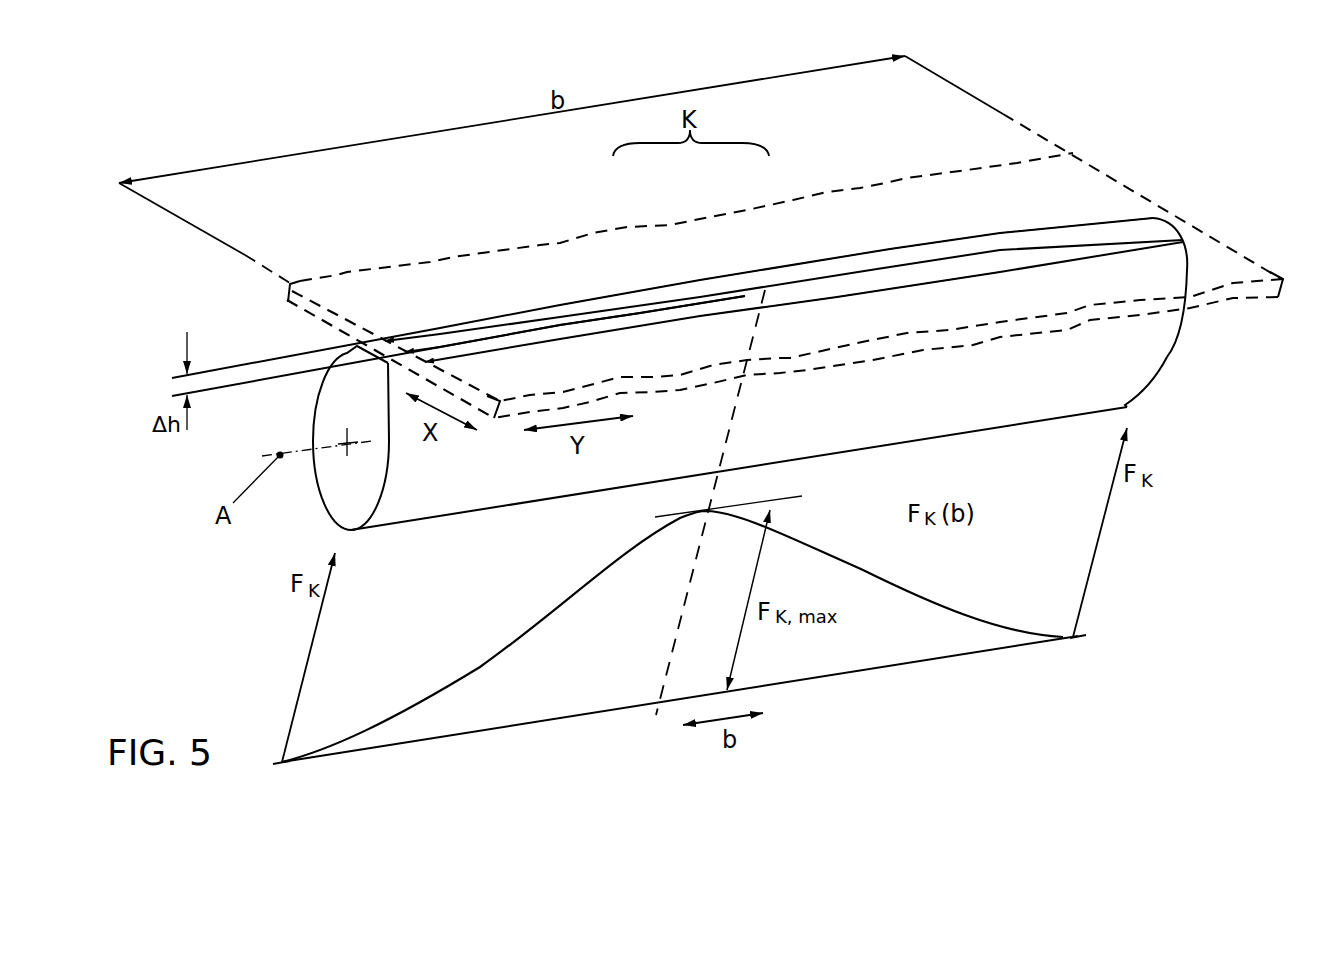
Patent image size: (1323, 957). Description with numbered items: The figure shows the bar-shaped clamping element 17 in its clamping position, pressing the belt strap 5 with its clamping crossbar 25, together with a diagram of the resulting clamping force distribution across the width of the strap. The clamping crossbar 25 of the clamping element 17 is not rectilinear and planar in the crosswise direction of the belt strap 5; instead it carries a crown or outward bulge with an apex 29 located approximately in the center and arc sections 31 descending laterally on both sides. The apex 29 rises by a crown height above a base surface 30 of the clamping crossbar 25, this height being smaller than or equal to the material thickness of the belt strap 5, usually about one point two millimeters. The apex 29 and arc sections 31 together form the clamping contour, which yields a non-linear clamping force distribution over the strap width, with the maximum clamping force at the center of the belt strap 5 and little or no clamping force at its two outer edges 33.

The belt strap 5 is at (456, 253).
The clamping element 17 is at (1167, 357).
The clamping crossbar 25 is at (957, 232).
The apex 29 is at (765, 289).
The base surface 30 is at (837, 297).
The arc sections 31 is at (620, 313).
The outer edges 33 is at (329, 304).